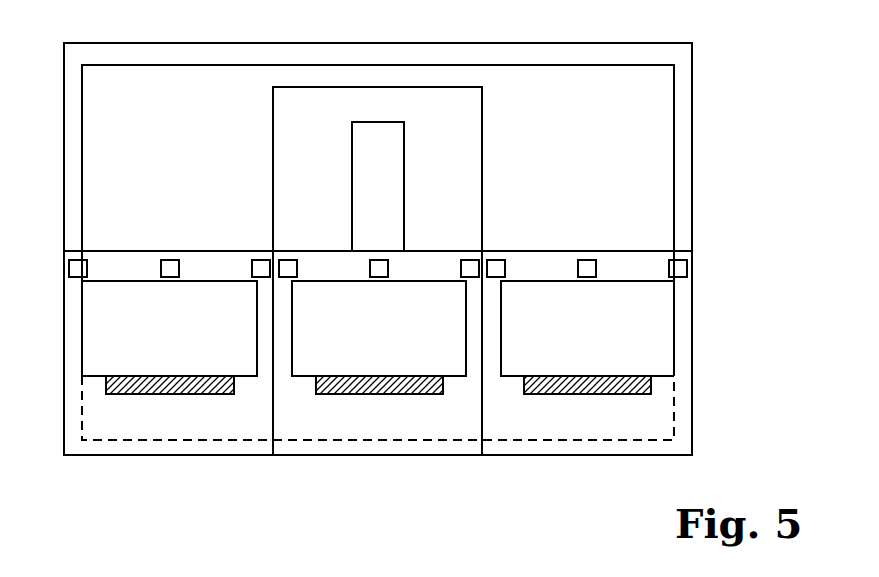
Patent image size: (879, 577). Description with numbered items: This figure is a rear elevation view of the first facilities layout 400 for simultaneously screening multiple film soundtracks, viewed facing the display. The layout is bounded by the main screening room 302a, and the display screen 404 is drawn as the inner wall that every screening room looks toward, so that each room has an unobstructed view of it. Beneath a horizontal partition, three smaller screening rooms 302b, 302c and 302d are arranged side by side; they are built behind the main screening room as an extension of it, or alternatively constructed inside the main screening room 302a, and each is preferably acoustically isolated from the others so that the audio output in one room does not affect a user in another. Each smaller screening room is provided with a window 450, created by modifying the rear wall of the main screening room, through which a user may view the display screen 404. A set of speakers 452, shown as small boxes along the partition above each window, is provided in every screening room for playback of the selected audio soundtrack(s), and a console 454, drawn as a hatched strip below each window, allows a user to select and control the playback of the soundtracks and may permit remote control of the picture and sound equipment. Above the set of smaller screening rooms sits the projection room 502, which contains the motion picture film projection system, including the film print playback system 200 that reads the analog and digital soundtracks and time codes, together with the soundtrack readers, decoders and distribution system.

The film print playback system 200 is at (378, 120).
The projection room 502 is at (402, 88).
The facilities layout 400 is at (684, 36).
The main screening room 302a is at (692, 77).
The display screen 404 is at (674, 118).
The speakers 452 is at (379, 256).
The window 450 is at (234, 368).
The console 454 is at (524, 396).
The screening room 302b is at (177, 369).
The screening room 302c is at (379, 369).
The screening room 302d is at (581, 369).